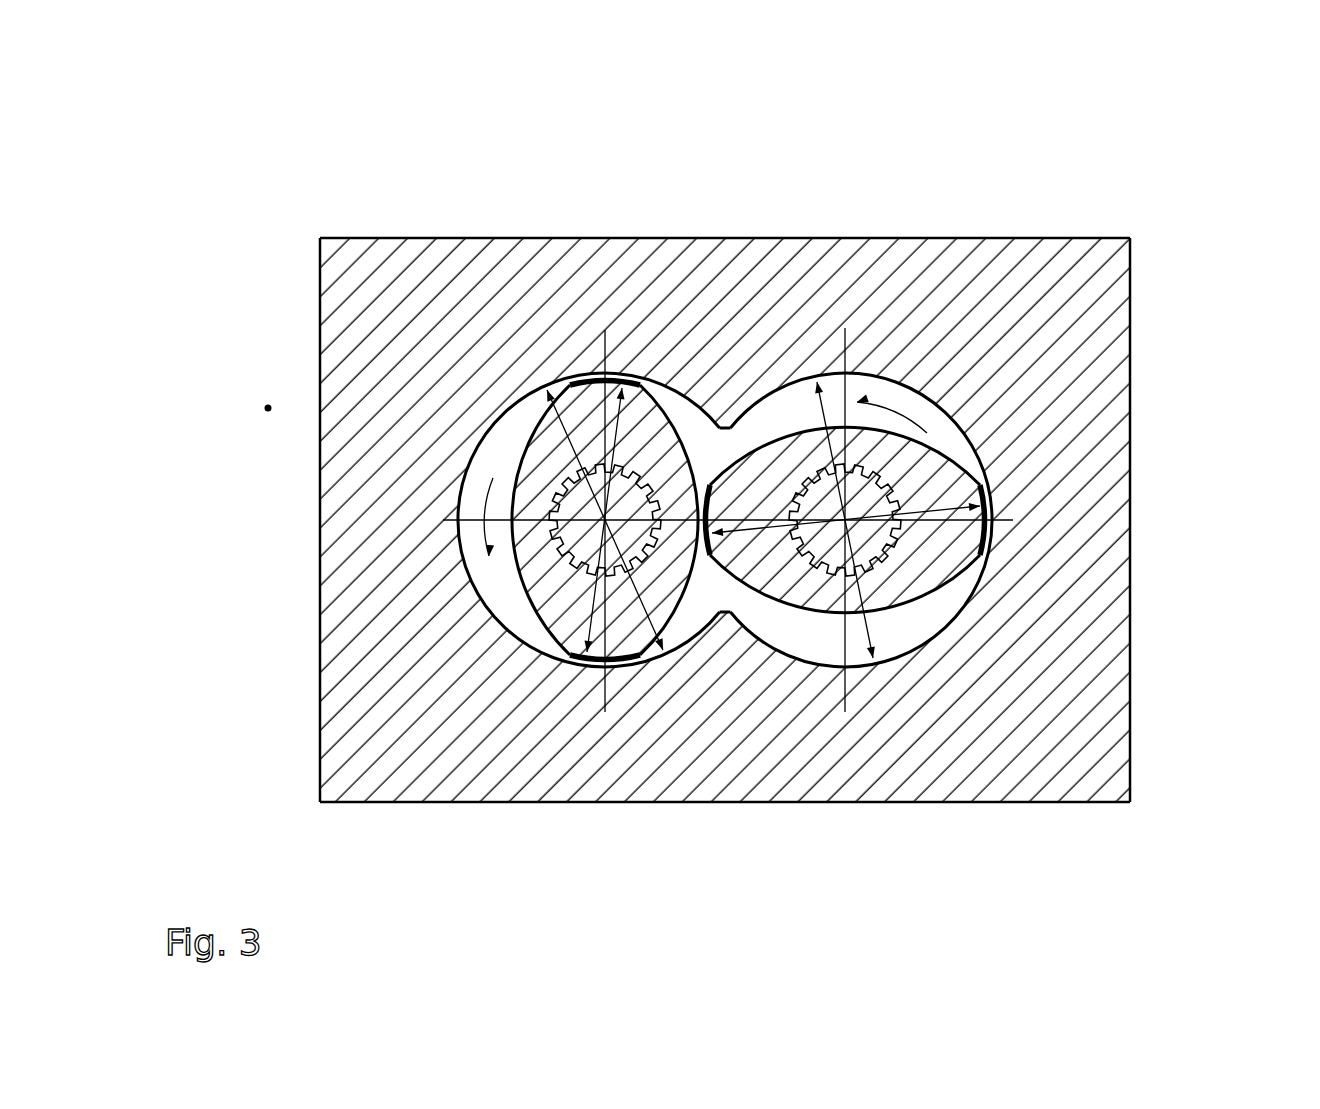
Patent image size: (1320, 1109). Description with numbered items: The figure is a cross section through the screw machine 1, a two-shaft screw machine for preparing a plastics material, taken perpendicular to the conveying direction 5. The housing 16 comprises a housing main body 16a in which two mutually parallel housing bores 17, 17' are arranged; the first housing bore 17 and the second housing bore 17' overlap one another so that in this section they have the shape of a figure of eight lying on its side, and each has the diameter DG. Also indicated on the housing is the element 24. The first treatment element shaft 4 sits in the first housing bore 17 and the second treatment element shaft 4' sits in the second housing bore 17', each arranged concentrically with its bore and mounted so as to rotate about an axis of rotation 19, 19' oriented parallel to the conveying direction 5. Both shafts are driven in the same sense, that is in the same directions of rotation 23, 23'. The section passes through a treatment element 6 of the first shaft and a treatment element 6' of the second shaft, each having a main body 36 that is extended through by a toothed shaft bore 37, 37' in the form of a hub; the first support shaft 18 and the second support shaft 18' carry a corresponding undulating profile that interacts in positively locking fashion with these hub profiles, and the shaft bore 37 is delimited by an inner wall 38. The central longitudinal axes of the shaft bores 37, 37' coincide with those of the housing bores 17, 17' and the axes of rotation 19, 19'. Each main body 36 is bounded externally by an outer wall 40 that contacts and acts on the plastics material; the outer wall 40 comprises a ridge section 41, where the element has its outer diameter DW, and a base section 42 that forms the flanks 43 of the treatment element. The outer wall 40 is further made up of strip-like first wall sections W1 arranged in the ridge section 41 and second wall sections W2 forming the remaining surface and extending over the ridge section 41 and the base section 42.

The screw machine 1 is at (510, 125).
The first treatment element shaft 4 is at (430, 536).
The second treatment element shaft 4' is at (898, 386).
The conveying direction 5 is at (266, 408).
The treatment element 6 is at (558, 621).
The treatment element 6' is at (930, 620).
The housing 16 is at (919, 230).
The housing main body 16a is at (1043, 786).
The first housing bore 17 is at (317, 534).
The second housing bore 17' is at (808, 278).
The first support shaft 18 is at (577, 649).
The second support shaft 18' is at (900, 386).
The axis of rotation 19 is at (589, 643).
The axis of rotation 19' is at (856, 643).
The direction of rotation 23 is at (328, 513).
The direction of rotation 23' is at (887, 296).
The housing top wall 24 is at (408, 248).
The main body 36 is at (516, 478).
The shaft bore 37 is at (593, 409).
The shaft bore 37' is at (863, 357).
The inner wall 38 is at (577, 547).
The outer wall 40 is at (532, 442).
The ridge section 41 is at (985, 497).
The base section 42 is at (980, 452).
The flanks 43 is at (925, 620).
The first wall sections W1 is at (605, 520).
The second wall sections W2 is at (950, 598).
The outer diameter DW is at (592, 636).
The diameter DG is at (645, 618).